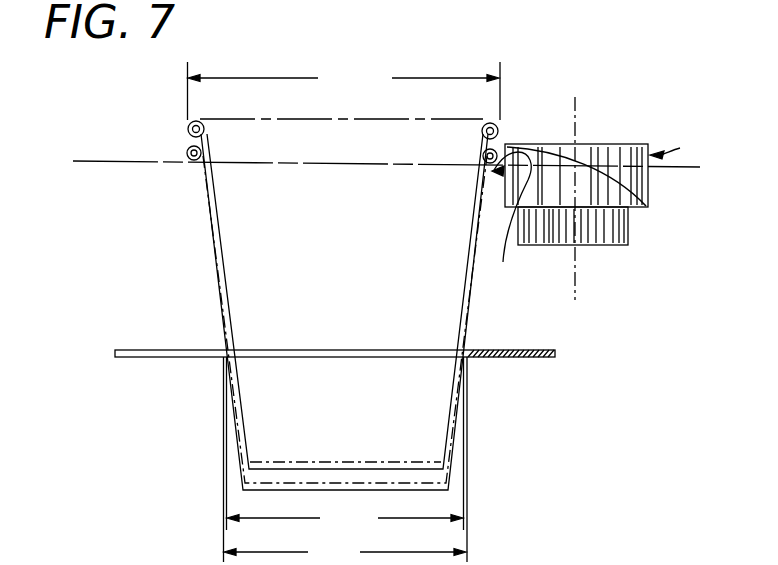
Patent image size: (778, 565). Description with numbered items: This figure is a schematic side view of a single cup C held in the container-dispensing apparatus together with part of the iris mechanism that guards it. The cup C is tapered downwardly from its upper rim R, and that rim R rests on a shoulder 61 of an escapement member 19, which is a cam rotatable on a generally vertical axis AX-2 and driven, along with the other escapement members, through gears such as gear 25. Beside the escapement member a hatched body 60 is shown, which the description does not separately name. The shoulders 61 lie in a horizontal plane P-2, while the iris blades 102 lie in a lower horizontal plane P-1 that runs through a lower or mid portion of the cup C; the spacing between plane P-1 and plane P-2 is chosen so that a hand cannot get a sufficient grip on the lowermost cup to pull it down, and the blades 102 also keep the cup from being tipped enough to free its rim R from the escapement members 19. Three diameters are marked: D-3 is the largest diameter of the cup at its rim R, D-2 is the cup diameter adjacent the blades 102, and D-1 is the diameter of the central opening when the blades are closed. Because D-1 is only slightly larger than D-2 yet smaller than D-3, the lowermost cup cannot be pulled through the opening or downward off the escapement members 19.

The roller body 60 is at (597, 143).
The gear 25 is at (629, 232).
The escapement member 19 is at (679, 152).
The shoulder 61 is at (512, 219).
The iris blade 102 is at (522, 358).
The cup C is at (213, 269).
The rim R is at (186, 122).
The horizontal plane of the iris blades P-1 is at (166, 360).
The horizontal plane of the shoulders P-2 is at (128, 164).
The vertical axis AX-2 is at (584, 112).
The diameter of the central opening D-1 is at (346, 461).
The diameter of the cup adjacent the blades D-2 is at (345, 444).
The largest diameter of the cup D-3 is at (344, 91).